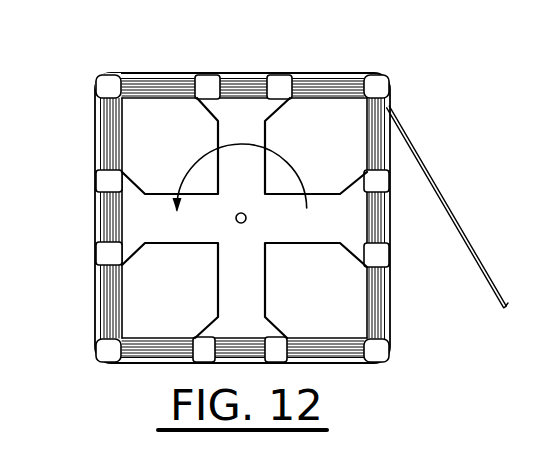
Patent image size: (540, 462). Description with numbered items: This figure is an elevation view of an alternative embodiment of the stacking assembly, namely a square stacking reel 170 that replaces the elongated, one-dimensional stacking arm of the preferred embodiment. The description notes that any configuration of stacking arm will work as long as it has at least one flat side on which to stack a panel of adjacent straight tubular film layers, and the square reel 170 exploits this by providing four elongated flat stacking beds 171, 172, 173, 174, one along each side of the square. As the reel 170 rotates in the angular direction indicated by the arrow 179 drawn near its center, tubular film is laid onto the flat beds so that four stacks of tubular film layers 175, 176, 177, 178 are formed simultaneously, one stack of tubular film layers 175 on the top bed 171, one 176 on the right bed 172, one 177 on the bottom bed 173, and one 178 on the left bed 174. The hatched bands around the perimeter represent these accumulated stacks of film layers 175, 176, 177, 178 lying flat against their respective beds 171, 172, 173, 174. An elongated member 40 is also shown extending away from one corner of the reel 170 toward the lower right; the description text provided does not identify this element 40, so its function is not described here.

The rod 40 is at (413, 147).
The stacking reel 170 is at (269, 62).
The elongated flat stacking bed 171 is at (183, 100).
The elongated flat stacking bed 172 is at (367, 138).
The elongated flat stacking bed 173 is at (300, 338).
The elongated flat stacking bed 174 is at (122, 292).
The stack of tubular film layers 175 is at (237, 75).
The stack of tubular film layers 176 is at (388, 290).
The stack of tubular film layers 177 is at (163, 353).
The stack of tubular film layers 178 is at (105, 120).
The arrow 179 is at (198, 165).